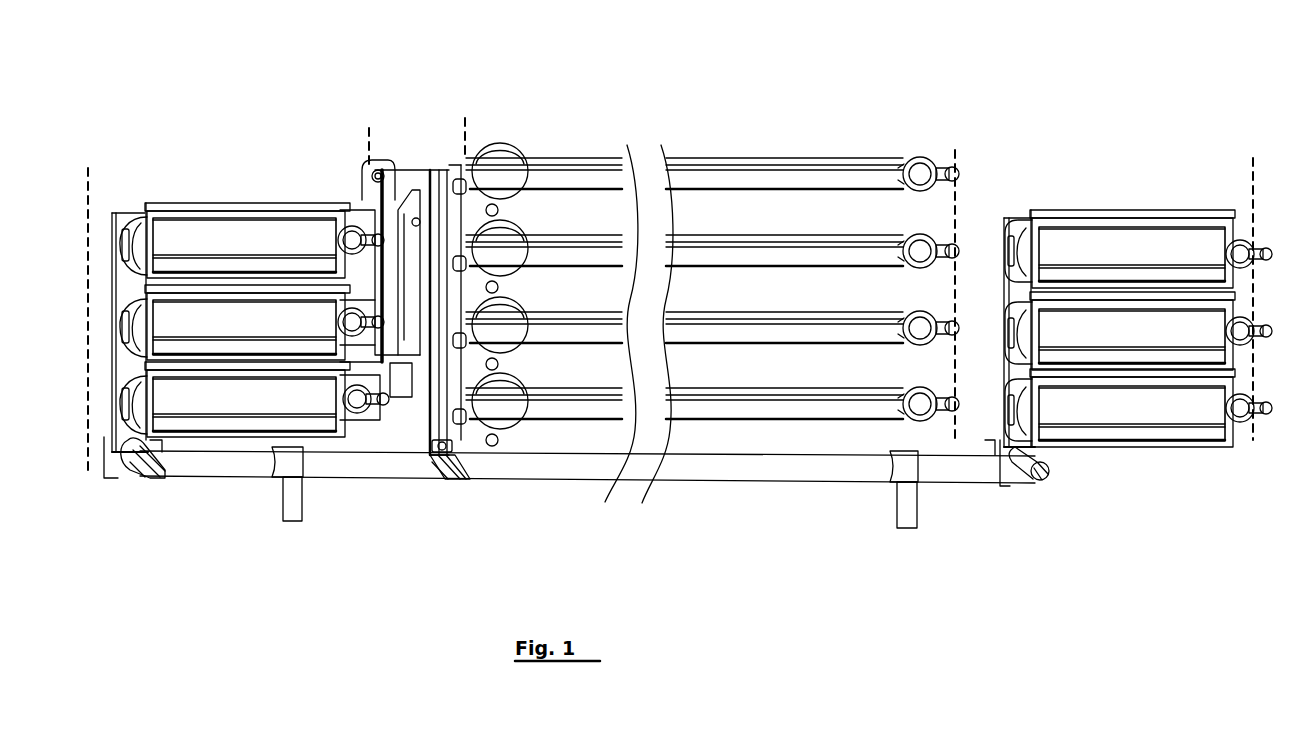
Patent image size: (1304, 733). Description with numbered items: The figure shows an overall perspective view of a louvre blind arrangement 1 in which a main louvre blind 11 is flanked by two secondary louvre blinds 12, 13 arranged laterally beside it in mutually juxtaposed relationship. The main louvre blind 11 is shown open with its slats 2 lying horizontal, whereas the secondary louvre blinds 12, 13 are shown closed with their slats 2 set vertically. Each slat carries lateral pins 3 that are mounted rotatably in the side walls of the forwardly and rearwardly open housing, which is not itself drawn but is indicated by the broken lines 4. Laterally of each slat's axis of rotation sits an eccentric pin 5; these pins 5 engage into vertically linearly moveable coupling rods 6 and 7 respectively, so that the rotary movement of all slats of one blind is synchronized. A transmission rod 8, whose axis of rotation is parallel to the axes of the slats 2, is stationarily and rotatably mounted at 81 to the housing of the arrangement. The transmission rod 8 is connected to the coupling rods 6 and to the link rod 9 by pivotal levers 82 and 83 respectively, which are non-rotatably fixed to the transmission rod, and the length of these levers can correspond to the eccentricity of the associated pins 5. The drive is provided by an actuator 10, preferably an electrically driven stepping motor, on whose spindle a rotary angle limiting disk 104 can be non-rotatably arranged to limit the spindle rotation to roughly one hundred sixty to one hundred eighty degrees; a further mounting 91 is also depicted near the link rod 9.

The louvre blind arrangement 1 is at (273, 580).
The slats 2 is at (232, 247).
The lateral pins 3 is at (975, 160).
The broken lines 4 is at (88, 168).
The eccentric pin 5 is at (162, 455).
The coupling rod 6 is at (110, 437).
The coupling rod 7 is at (450, 165).
The transmission rod 8 is at (760, 478).
The link rod 9 is at (410, 165).
The actuator 10 is at (358, 212).
The main louvre blind 11 is at (630, 130).
The secondary louvre blind 12 is at (232, 150).
The secondary louvre blind 13 is at (1103, 150).
The mounting of the transmission rod 81 is at (292, 490).
The pivotal lever 82 is at (140, 490).
The pivotal lever 83 is at (452, 467).
The fastener 91 is at (445, 457).
The rotary angle limiting disk 104 is at (522, 162).